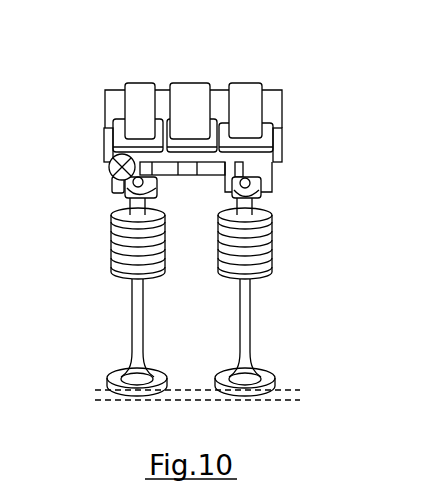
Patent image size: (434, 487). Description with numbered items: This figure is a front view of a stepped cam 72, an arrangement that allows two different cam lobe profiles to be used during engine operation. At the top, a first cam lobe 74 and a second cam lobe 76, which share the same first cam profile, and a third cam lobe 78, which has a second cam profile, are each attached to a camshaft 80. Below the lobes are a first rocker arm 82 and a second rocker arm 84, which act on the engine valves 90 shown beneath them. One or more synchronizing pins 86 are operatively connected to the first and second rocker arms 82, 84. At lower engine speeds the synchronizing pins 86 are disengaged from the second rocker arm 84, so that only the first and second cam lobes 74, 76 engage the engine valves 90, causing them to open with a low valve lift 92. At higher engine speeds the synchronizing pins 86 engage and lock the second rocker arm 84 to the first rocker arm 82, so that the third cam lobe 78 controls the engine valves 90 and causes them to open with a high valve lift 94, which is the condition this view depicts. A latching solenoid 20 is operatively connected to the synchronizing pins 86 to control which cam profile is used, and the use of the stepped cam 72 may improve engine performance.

The stepped cam 72 is at (306, 92).
The first cam lobe 74 is at (133, 88).
The second cam lobe 76 is at (243, 90).
The third cam lobe 78 is at (182, 88).
The camshaft 80 is at (113, 103).
The first rocker arm 82 is at (131, 146).
The second rocker arm 84 is at (197, 185).
The synchronizing pin 86 is at (162, 175).
The latching solenoid 20 is at (109, 166).
The engine valve 90 is at (122, 372).
The low valve lift 92 is at (288, 390).
The high valve lift 94 is at (275, 402).